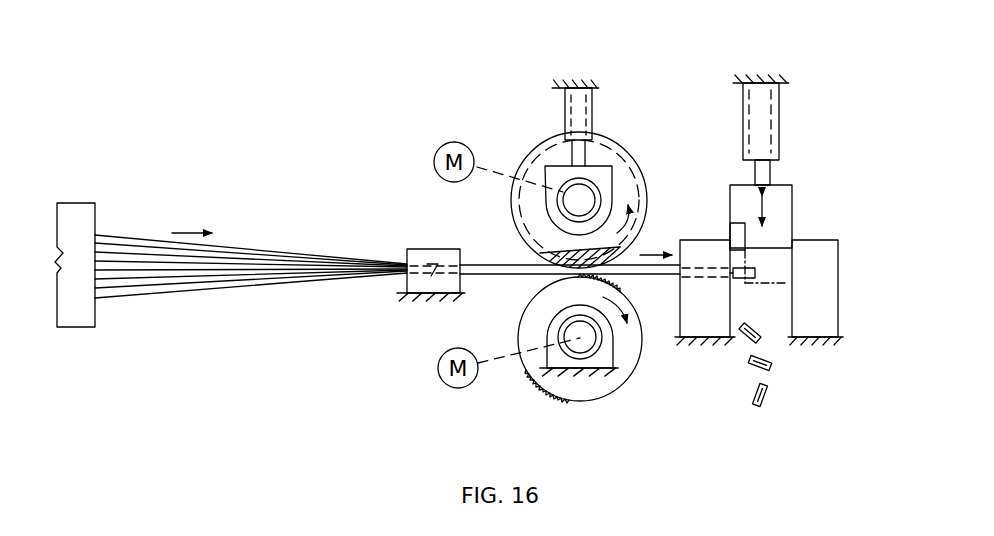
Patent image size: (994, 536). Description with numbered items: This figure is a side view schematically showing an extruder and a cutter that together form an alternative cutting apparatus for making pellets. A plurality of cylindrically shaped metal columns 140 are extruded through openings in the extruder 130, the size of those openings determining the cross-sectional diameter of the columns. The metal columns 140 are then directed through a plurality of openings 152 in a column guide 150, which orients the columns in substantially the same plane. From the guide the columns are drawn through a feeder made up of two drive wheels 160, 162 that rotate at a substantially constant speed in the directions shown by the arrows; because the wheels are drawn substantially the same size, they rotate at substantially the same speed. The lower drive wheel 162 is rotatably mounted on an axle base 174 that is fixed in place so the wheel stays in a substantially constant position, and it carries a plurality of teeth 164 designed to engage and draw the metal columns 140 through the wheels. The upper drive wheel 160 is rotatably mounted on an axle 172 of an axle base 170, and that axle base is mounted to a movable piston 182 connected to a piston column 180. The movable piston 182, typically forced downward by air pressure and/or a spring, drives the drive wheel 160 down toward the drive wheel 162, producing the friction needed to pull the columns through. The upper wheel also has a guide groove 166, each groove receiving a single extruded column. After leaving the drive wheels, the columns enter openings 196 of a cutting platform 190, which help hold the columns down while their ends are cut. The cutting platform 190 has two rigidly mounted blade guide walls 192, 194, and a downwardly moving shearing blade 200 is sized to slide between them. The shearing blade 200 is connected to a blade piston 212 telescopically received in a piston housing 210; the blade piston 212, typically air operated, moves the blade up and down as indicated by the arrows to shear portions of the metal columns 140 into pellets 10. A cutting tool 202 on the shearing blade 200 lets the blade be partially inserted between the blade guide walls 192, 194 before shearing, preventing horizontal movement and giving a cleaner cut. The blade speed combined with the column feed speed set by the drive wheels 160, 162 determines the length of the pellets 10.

The pellets 10 is at (772, 373).
The extruder 130 is at (76, 213).
The metal columns 140 is at (228, 262).
The column guide 150 is at (430, 245).
The openings 152 is at (415, 300).
The drive wheel 160 is at (612, 137).
The drive wheel 162 is at (637, 368).
The teeth 164 is at (553, 395).
The guide groove 166 is at (527, 155).
The axle base 170 is at (607, 175).
The axle 172 is at (588, 198).
The axle base 174 is at (557, 325).
The piston column 180 is at (583, 107).
The movable piston 182 is at (571, 160).
The cutting platform 190 is at (702, 240).
The blade guide wall 192 is at (705, 335).
The blade guide wall 194 is at (820, 327).
The openings 196 is at (706, 283).
The shearing blade 200 is at (782, 208).
The cutting tool 202 is at (735, 238).
The piston housing 210 is at (767, 107).
The blade piston 212 is at (770, 175).